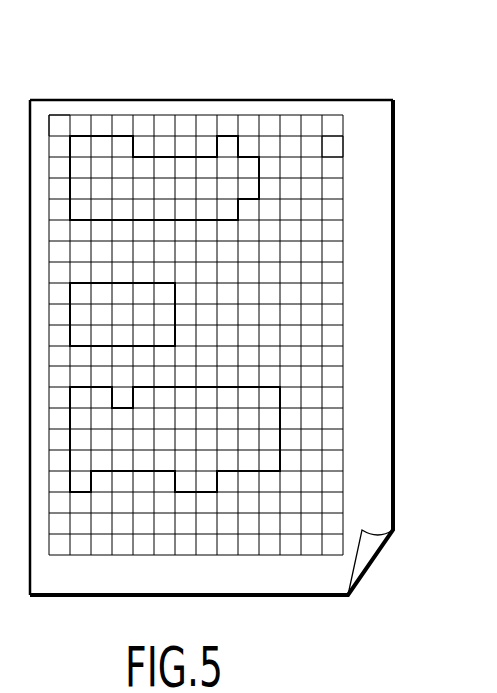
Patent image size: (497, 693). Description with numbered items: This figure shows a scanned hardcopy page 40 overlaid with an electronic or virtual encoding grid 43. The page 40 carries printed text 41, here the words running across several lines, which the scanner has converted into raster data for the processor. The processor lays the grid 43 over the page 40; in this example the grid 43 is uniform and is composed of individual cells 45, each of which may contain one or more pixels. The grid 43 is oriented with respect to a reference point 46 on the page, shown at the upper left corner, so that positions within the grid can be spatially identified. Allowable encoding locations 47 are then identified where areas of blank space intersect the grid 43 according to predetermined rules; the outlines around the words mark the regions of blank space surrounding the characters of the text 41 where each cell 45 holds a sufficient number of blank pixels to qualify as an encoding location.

The hardcopy input document 40 is at (372, 360).
The text 41 is at (97, 152).
The grid 43 is at (300, 128).
The cell 45 is at (333, 145).
The reference point 46 is at (52, 114).
The allowable encoding locations 47 is at (143, 152).